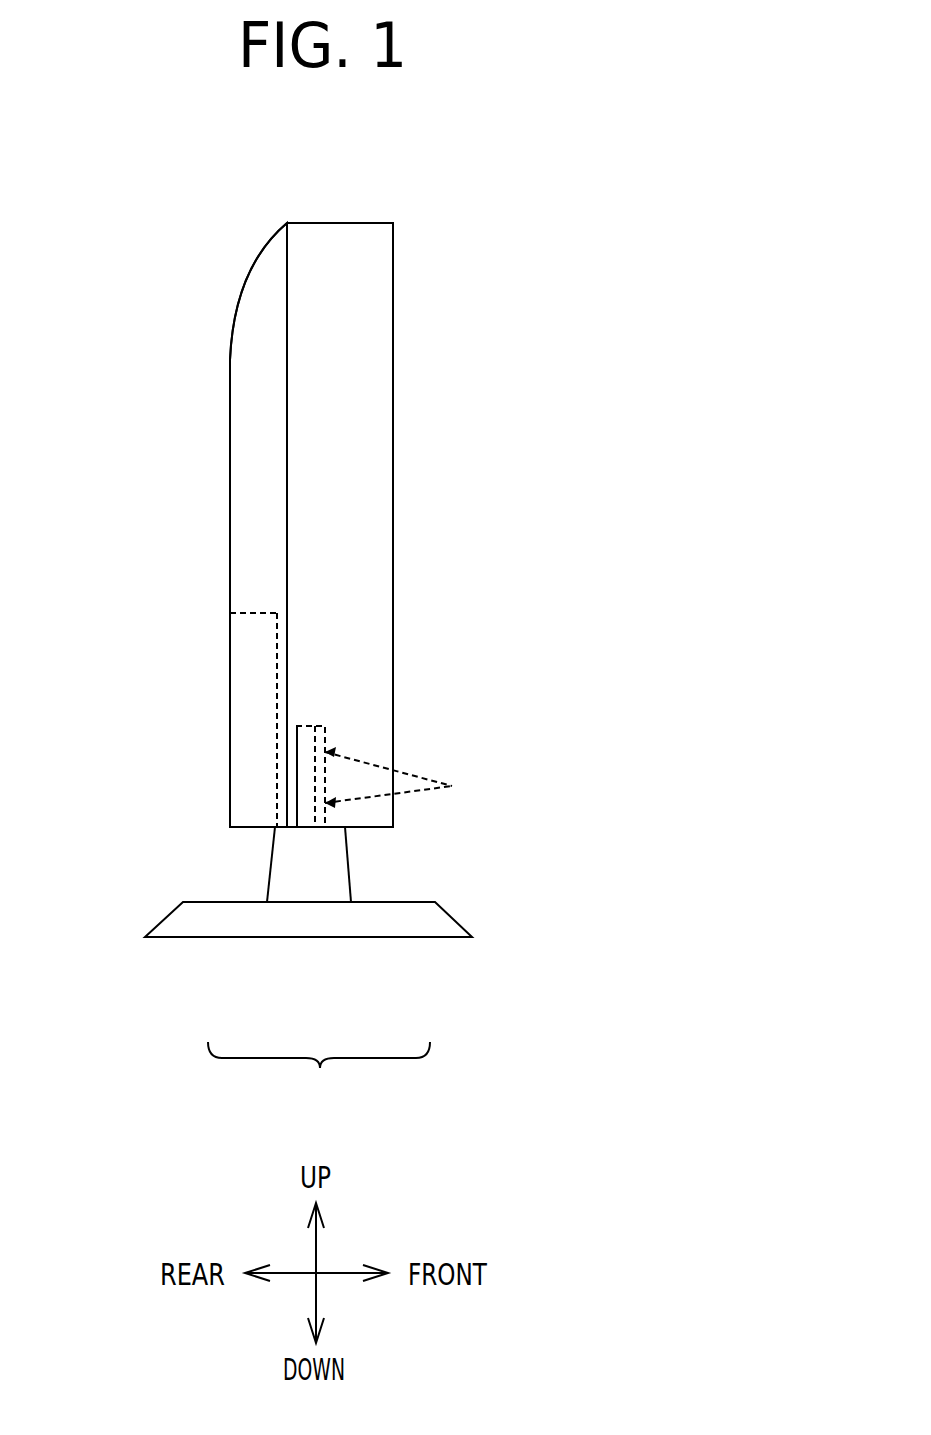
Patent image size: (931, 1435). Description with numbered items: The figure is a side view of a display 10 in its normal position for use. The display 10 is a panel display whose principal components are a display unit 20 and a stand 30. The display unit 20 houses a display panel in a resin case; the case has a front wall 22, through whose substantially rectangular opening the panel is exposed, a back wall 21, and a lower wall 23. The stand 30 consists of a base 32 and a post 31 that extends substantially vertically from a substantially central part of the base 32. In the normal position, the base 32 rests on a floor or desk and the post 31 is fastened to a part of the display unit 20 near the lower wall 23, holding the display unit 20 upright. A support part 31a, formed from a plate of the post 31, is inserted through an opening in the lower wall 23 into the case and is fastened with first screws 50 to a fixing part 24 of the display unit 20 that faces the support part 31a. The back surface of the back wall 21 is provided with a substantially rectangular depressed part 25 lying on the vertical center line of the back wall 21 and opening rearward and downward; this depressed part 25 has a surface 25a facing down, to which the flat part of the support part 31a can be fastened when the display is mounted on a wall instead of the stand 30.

The display 10 is at (470, 467).
The display unit 20 is at (354, 240).
The back wall 21 is at (230, 398).
The front wall 22 is at (393, 367).
The lower wall 23 is at (372, 827).
The fixing part 24 is at (297, 740).
The depressed part 25 is at (277, 652).
The surface facing down 25a is at (257, 613).
The stand 30 is at (319, 1077).
The post 31 is at (287, 887).
The support part 31a is at (325, 742).
The base 32 is at (367, 930).
The first screws 50 is at (406, 777).